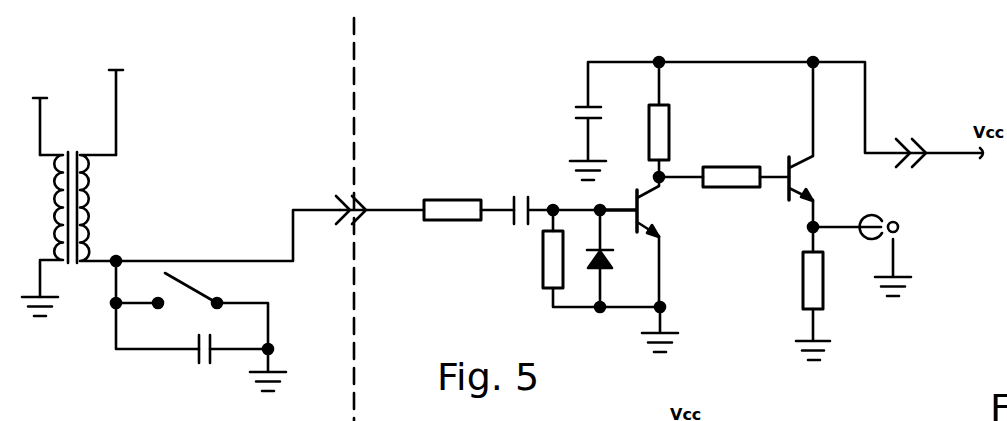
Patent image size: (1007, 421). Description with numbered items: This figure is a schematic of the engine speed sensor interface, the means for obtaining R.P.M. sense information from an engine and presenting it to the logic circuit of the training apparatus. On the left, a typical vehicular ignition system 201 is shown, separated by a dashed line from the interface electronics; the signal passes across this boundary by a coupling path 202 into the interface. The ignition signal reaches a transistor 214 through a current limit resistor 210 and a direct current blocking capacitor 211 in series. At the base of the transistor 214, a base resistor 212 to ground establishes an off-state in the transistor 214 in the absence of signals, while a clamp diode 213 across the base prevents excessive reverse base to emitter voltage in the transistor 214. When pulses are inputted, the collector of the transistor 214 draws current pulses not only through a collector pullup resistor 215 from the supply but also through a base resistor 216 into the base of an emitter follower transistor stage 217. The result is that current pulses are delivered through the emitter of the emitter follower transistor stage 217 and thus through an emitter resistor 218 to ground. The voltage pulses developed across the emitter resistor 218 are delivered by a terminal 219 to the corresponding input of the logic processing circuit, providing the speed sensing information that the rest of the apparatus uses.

The vehicular ignition system 201 is at (176, 209).
The signal coupling arrow 202 is at (470, 136).
The current limit resistor 210 is at (433, 198).
The direct current blocking capacitor 211 is at (510, 197).
The base resistor 212 is at (538, 258).
The clamp diode 213 is at (610, 267).
The transistor 214 is at (662, 221).
The collector pullup resistor 215 is at (672, 128).
The base resistor 216 is at (717, 168).
The emitter follower transistor stage 217 is at (782, 159).
The emitter resistor 218 is at (797, 296).
The terminal 219 is at (878, 219).